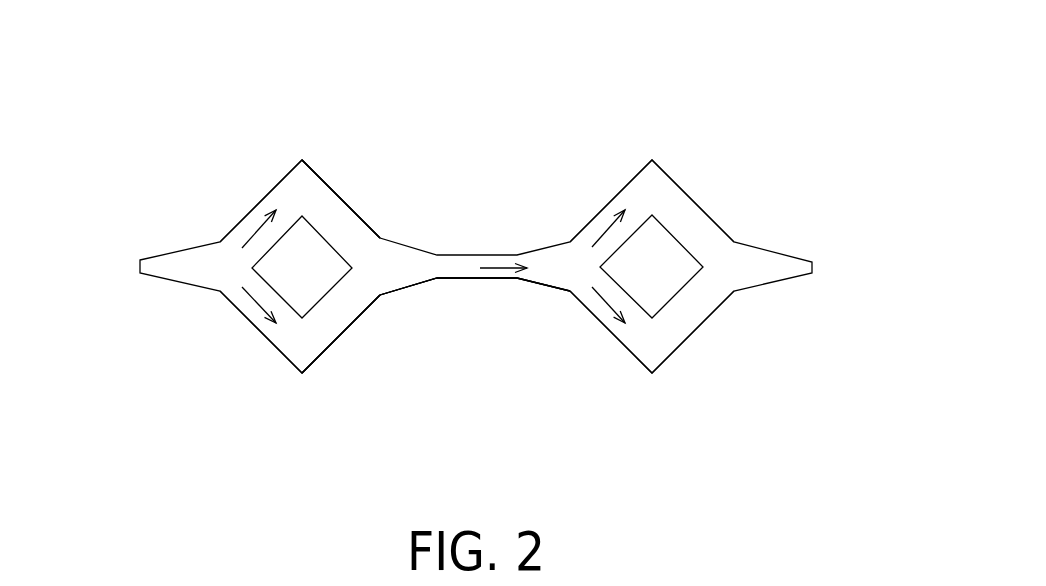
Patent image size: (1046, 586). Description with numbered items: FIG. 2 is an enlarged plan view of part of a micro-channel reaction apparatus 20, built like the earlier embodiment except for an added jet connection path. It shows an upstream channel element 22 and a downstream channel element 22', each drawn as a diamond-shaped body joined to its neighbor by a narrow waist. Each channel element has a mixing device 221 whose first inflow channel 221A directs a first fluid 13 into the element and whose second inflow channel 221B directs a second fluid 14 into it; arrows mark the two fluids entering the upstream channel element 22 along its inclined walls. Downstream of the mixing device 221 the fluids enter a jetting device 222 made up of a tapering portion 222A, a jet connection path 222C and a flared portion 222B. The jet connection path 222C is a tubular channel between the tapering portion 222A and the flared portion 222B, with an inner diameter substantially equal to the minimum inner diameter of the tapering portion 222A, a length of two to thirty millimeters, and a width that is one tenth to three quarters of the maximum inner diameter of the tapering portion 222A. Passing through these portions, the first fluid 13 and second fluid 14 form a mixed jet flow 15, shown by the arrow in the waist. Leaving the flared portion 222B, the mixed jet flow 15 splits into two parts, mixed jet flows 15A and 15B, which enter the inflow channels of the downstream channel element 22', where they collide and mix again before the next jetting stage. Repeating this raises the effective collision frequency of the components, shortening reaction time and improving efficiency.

The micro-channel reaction apparatus 20 is at (107, 44).
The upstream channel element 22 is at (300, 328).
The downstream channel element 22' is at (652, 326).
The first fluid 13 is at (260, 225).
The second fluid 14 is at (258, 302).
The mixed jet flow 15 is at (506, 280).
The mixed jet flow 15A is at (610, 228).
The mixed jet flow 15B is at (610, 303).
The reflecting surfaces of first coupling portion 221 is at (455, 105).
The first reflecting surface 221A is at (345, 197).
The second reflecting surface 221B is at (345, 328).
The lower waist boundary 222 is at (617, 429).
The tapering portion 222A is at (413, 287).
The jet connection path 222C is at (506, 280).
The flared portion 222B is at (543, 285).